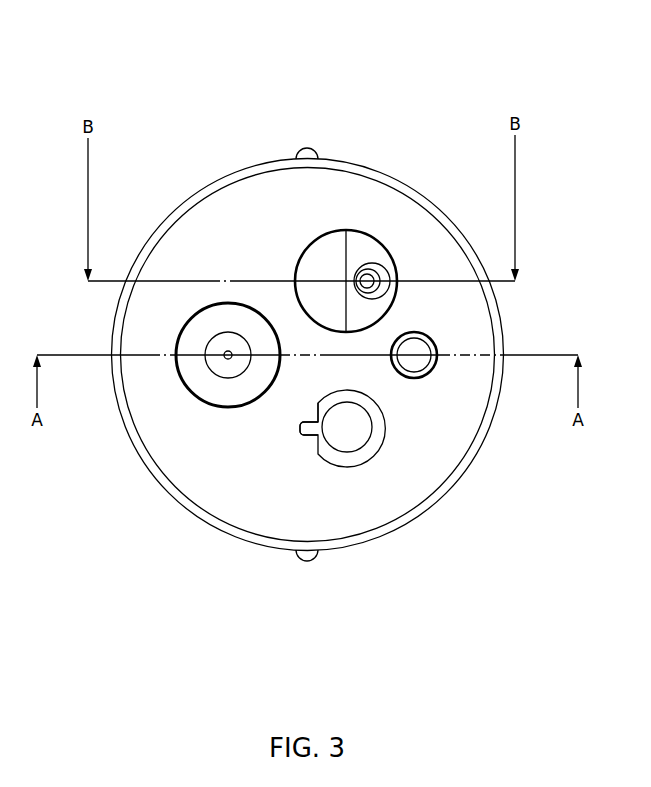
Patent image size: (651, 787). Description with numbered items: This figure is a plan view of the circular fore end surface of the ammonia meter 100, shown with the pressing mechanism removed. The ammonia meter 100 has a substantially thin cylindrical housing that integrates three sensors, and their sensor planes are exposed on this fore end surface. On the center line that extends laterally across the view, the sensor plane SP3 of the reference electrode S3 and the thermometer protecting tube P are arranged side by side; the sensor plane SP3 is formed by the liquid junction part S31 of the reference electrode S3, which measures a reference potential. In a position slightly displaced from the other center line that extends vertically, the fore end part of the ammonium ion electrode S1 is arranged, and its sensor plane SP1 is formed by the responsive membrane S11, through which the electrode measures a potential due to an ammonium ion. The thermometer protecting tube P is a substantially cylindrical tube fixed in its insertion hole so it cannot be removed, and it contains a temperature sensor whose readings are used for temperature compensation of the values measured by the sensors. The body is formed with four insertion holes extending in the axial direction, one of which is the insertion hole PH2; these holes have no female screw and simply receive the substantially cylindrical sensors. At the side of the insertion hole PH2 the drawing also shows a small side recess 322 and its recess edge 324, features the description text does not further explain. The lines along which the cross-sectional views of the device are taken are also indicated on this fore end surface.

The ammonia meter 100 is at (160, 152).
The ammonium ion electrode S1 is at (385, 236).
The sensor plane SP1 is at (357, 245).
The responsive membrane S11 is at (377, 272).
The thermometer protecting tube P is at (432, 340).
The reference electrode S3 is at (178, 320).
The sensor plane SP3 is at (203, 338).
The liquid junction part S31 is at (228, 351).
The insertion hole PH2 is at (353, 435).
The notch upper edge 324 is at (317, 403).
The notch 322 is at (300, 436).